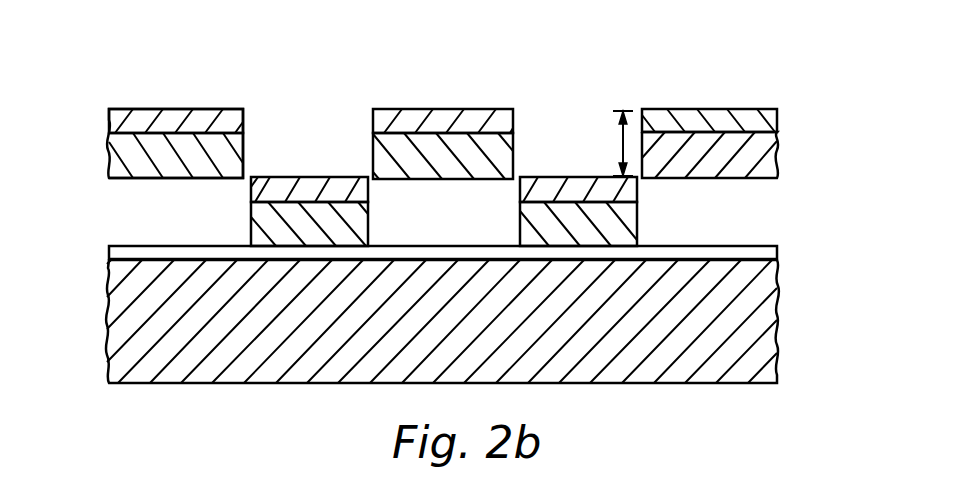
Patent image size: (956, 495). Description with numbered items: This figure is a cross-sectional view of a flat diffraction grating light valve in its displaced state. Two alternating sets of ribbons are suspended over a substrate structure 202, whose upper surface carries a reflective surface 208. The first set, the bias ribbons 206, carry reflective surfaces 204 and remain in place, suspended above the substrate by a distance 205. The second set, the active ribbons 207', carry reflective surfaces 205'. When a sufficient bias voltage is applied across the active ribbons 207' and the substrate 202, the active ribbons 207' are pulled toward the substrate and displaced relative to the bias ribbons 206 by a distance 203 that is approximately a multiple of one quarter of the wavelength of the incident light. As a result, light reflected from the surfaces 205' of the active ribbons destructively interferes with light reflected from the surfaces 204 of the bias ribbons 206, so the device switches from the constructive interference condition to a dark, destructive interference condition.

The substrate structure 202 is at (777, 326).
The displacement distance 203 is at (613, 111).
The reflective surface of bias ribbons 204 is at (167, 108).
The suspension distance 205 is at (135, 171).
The reflective surface of active ribbons 205' is at (444, 159).
The bias ribbons 206 is at (150, 178).
The active ribbons 207' is at (488, 225).
The reflective surface of substrate 208 is at (777, 250).